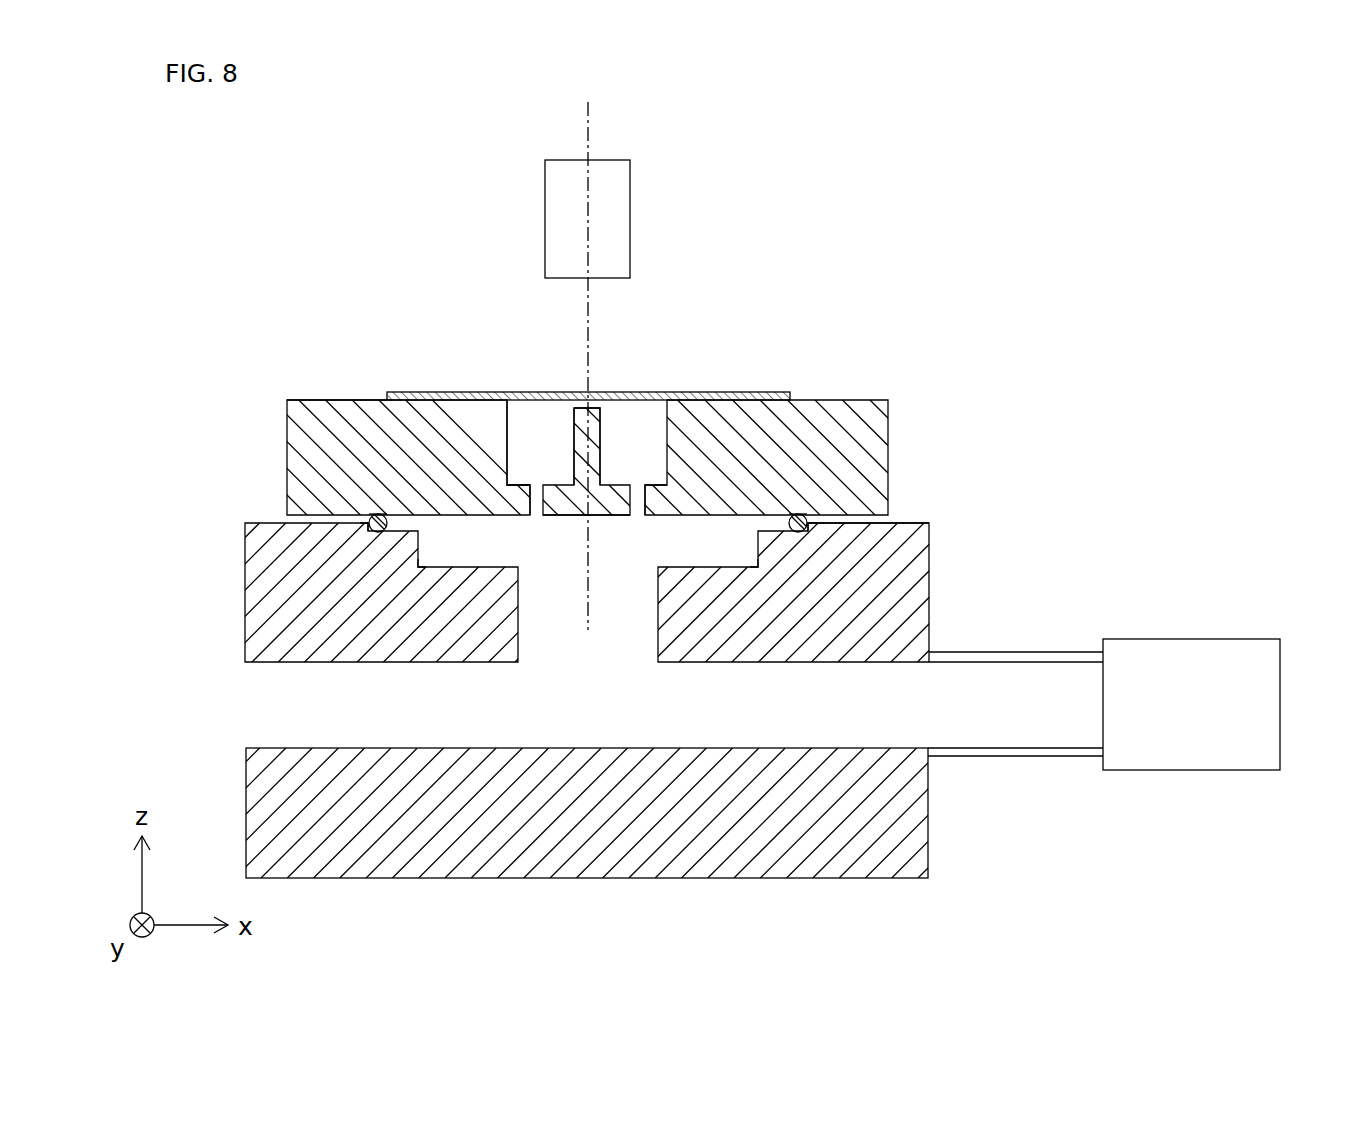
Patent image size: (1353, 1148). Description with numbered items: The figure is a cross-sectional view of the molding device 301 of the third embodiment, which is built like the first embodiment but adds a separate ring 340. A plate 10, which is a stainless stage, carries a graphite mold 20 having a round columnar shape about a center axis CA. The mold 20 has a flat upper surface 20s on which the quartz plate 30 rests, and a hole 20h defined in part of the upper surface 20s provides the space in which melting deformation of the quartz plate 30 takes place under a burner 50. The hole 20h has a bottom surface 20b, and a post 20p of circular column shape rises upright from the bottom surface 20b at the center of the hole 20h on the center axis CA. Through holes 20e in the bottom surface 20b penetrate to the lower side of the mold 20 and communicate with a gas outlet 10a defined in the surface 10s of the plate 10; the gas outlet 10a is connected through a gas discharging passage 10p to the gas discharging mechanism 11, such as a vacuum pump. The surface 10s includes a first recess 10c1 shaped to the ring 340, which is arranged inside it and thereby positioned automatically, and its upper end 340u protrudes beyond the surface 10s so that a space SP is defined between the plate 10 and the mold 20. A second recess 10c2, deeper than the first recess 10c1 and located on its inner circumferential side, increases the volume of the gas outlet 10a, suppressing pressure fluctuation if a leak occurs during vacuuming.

The molding device 301 is at (945, 100).
The center axis CA is at (588, 113).
The burner 50 is at (555, 190).
The mold 20 is at (888, 422).
The upper surface 20s is at (320, 397).
The quartz plate 30 is at (410, 392).
The through holes 20e is at (522, 500).
The hole 20h is at (532, 436).
The post 20p is at (580, 420).
The bottom surface 20b is at (621, 483).
The plate 10 is at (900, 638).
The surface 10s is at (900, 522).
The first recess 10c1 is at (368, 522).
The second recess 10c2 is at (465, 563).
The ring 340 is at (372, 530).
The upper end 340u is at (376, 514).
The space SP is at (320, 519).
The gas outlet 10a is at (601, 551).
The gas discharging passage 10p is at (905, 748).
The gas discharging mechanism 11 is at (1240, 658).